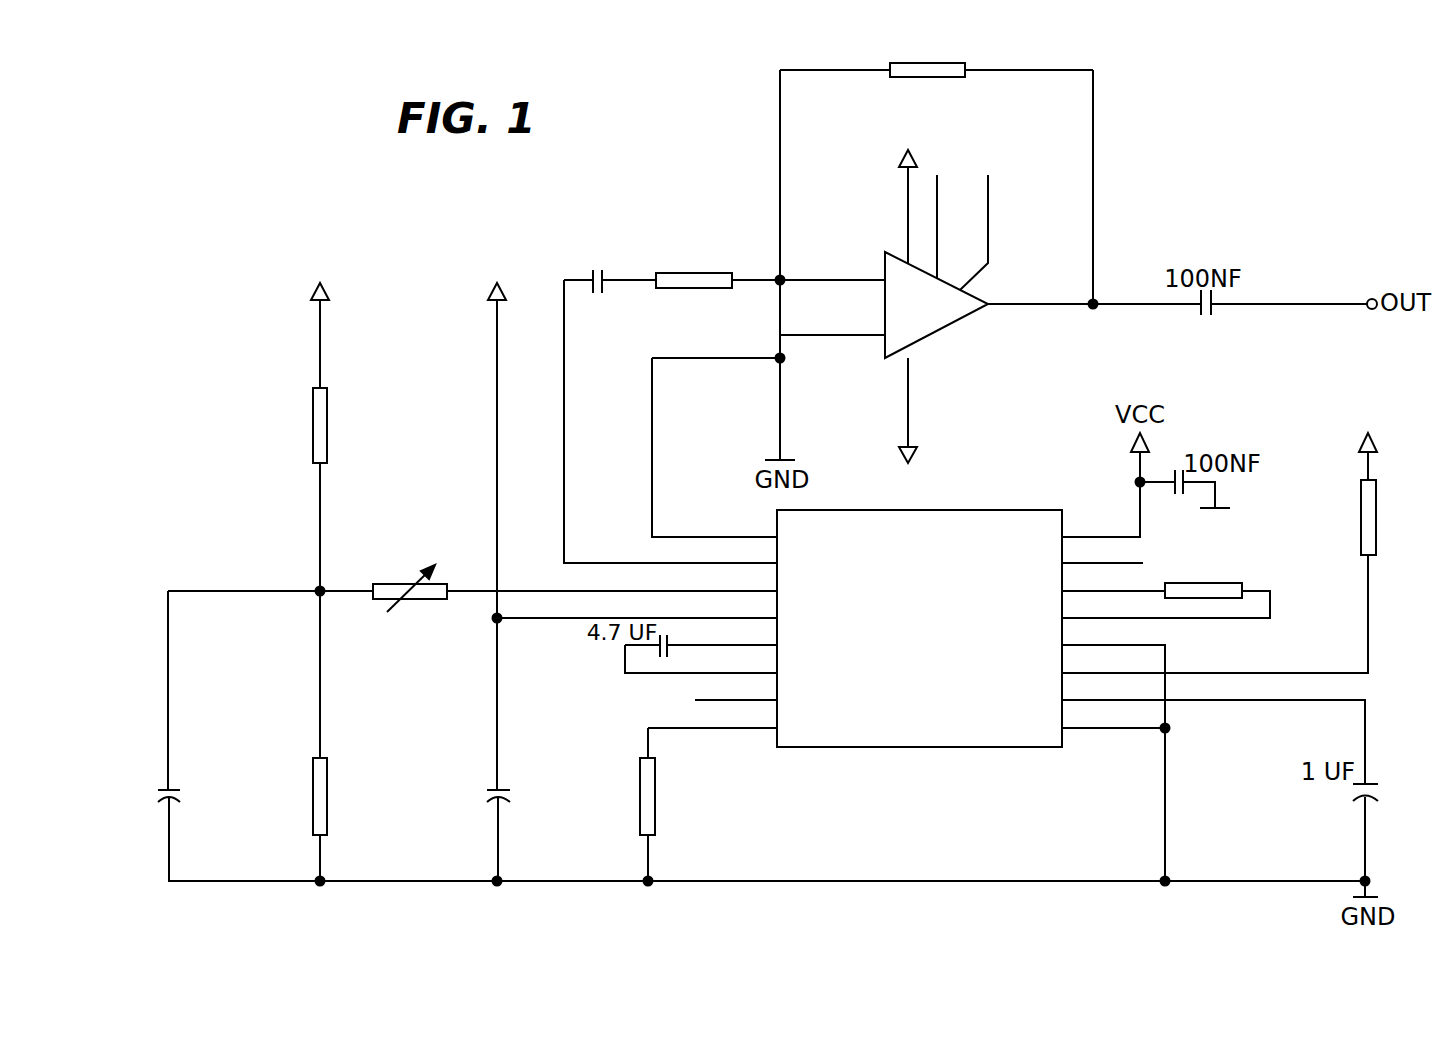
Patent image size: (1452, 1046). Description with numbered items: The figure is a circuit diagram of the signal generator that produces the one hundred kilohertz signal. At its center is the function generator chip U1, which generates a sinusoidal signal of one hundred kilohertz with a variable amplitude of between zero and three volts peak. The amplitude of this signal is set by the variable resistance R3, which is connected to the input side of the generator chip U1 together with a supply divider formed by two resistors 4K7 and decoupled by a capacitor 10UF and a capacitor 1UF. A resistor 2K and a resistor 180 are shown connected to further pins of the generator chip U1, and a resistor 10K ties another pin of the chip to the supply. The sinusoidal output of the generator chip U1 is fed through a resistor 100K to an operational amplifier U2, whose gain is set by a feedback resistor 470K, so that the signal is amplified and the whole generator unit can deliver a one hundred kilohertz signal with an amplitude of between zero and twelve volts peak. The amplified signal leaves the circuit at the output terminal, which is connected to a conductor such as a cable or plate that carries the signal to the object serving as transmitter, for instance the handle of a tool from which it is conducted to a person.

The XR2206 function generator IC U1 is at (926, 649).
The LF355 operational amplifier U2 is at (961, 307).
The variable resistance R3 is at (472, 595).
The feedback resistor 470K is at (936, 210).
The input resistor 100K is at (719, 268).
The 180 ohm resistor 180 is at (1166, 585).
The 10K resistor 10K is at (1227, 537).
The 10 uF capacitor 10UF is at (196, 736).
The 4.7K resistor 4K7 is at (304, 568).
The 1 uF capacitor 1UF is at (478, 568).
The 2K resistor 2K is at (629, 804).